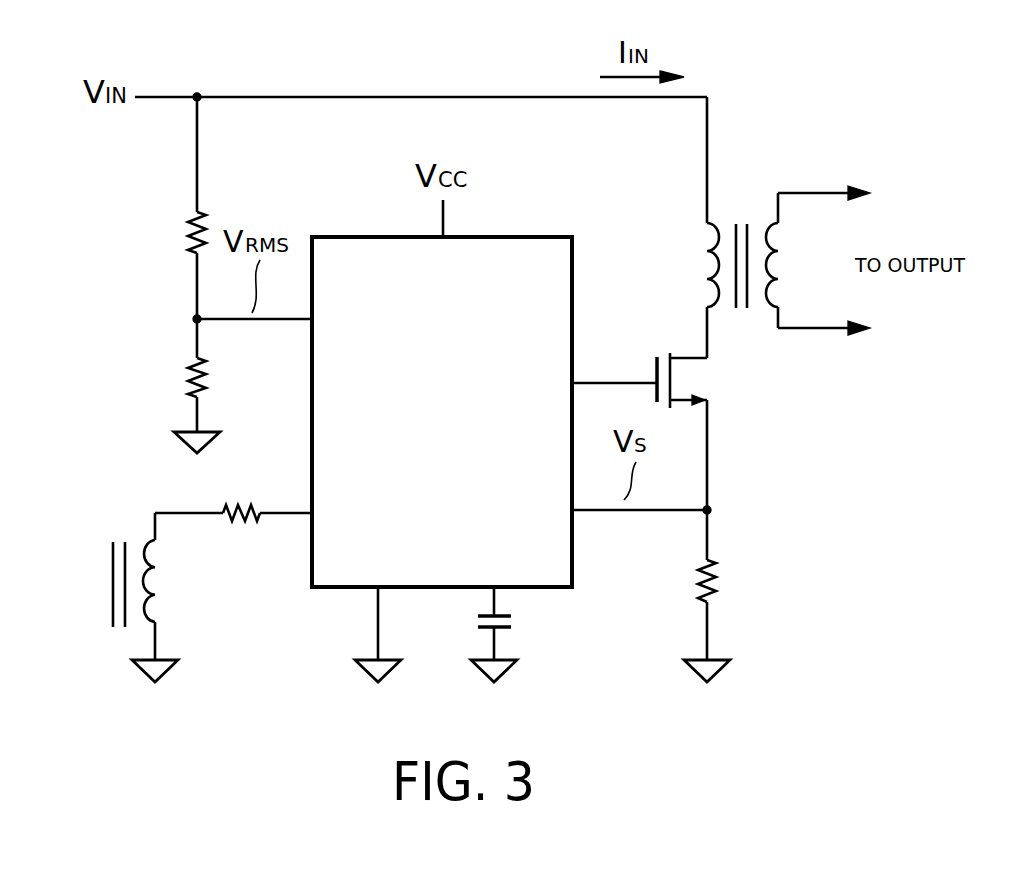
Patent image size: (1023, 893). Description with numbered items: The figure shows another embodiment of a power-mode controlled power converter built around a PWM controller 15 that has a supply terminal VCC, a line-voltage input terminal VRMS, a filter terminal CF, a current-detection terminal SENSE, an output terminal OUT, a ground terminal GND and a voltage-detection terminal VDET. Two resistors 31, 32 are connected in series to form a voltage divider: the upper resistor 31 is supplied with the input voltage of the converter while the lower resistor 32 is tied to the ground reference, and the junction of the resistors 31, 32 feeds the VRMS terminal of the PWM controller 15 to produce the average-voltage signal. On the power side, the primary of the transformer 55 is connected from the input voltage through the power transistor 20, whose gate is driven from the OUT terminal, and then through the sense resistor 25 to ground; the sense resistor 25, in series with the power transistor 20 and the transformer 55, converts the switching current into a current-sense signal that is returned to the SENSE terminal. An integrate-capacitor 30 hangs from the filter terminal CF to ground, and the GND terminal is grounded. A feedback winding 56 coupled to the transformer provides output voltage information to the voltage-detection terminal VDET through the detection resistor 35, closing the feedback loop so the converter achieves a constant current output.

The PWM controller 15 is at (580, 265).
The power transistor 20 is at (712, 382).
The sense resistor 25 is at (724, 583).
The integrate-capacitor 30 is at (517, 623).
The resistor 31 is at (178, 232).
The resistor 32 is at (178, 377).
The detection resistor 35 is at (245, 537).
The transformer 55 is at (740, 205).
The feedback winding 56 is at (110, 528).